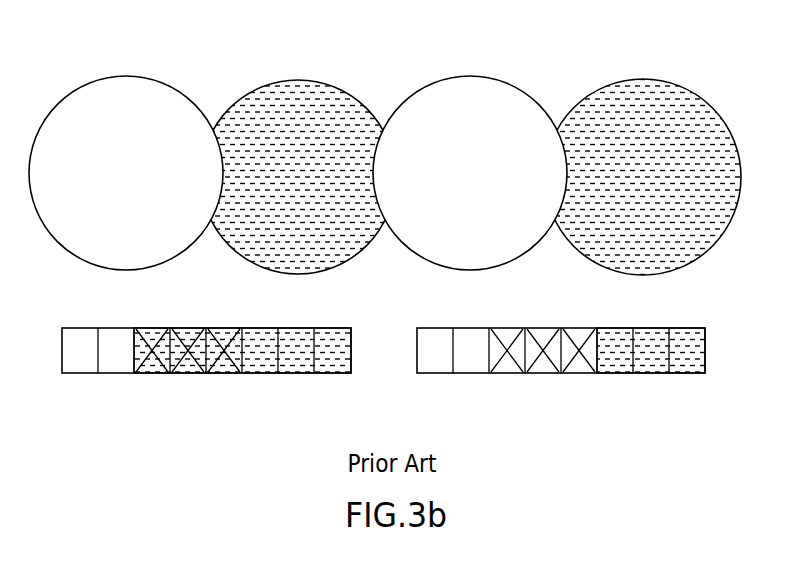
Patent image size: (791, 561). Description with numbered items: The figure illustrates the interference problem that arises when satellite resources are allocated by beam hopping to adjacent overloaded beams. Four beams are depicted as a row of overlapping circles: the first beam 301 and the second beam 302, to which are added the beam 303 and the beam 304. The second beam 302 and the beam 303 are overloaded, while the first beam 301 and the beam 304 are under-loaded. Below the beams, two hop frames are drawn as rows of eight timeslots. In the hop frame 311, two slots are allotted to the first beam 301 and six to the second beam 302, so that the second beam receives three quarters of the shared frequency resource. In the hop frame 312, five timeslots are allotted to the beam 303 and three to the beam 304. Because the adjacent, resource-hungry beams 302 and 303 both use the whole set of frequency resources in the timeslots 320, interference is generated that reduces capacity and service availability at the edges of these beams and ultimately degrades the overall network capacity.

The first beam 301 is at (97, 81).
The second beam 302 is at (285, 81).
The beam 303 is at (435, 82).
The beam 304 is at (612, 82).
The hop frame 311 is at (62, 353).
The hop frame 312 is at (705, 357).
The timeslots 320 is at (134, 383).